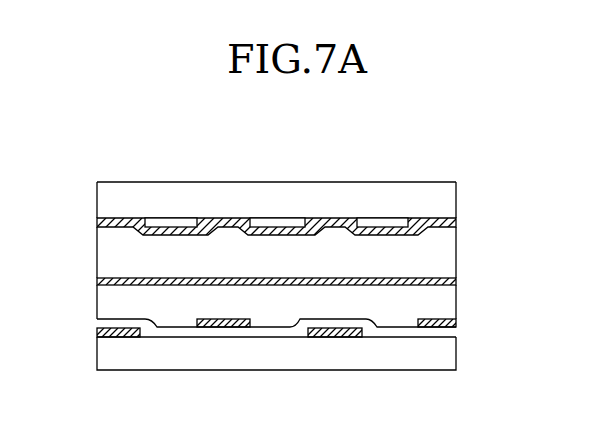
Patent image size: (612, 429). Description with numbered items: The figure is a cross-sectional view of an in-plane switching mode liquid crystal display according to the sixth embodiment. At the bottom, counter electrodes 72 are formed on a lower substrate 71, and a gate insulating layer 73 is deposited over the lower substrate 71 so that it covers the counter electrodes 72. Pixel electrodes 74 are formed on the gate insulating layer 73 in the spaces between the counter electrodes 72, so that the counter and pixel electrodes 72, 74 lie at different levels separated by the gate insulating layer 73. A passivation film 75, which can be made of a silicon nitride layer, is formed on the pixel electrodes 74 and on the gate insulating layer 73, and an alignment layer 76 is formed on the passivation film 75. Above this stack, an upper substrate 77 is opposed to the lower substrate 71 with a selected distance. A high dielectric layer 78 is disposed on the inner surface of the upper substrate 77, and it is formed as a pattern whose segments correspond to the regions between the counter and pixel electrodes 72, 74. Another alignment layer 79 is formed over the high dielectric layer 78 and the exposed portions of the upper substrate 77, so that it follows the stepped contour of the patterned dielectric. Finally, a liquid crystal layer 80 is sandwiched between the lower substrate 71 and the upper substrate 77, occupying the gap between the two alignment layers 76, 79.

The lower substrate 71 is at (444, 365).
The counter electrodes 72 is at (100, 331).
The gate insulating layer 73 is at (444, 336).
The pixel electrodes 74 is at (444, 321).
The passivation film 75 is at (105, 297).
The alignment layer 76 is at (100, 281).
The upper substrate 77 is at (405, 195).
The high dielectric layer 78 is at (275, 218).
The alignment layer 79 is at (444, 219).
The liquid crystal layer 80 is at (444, 255).